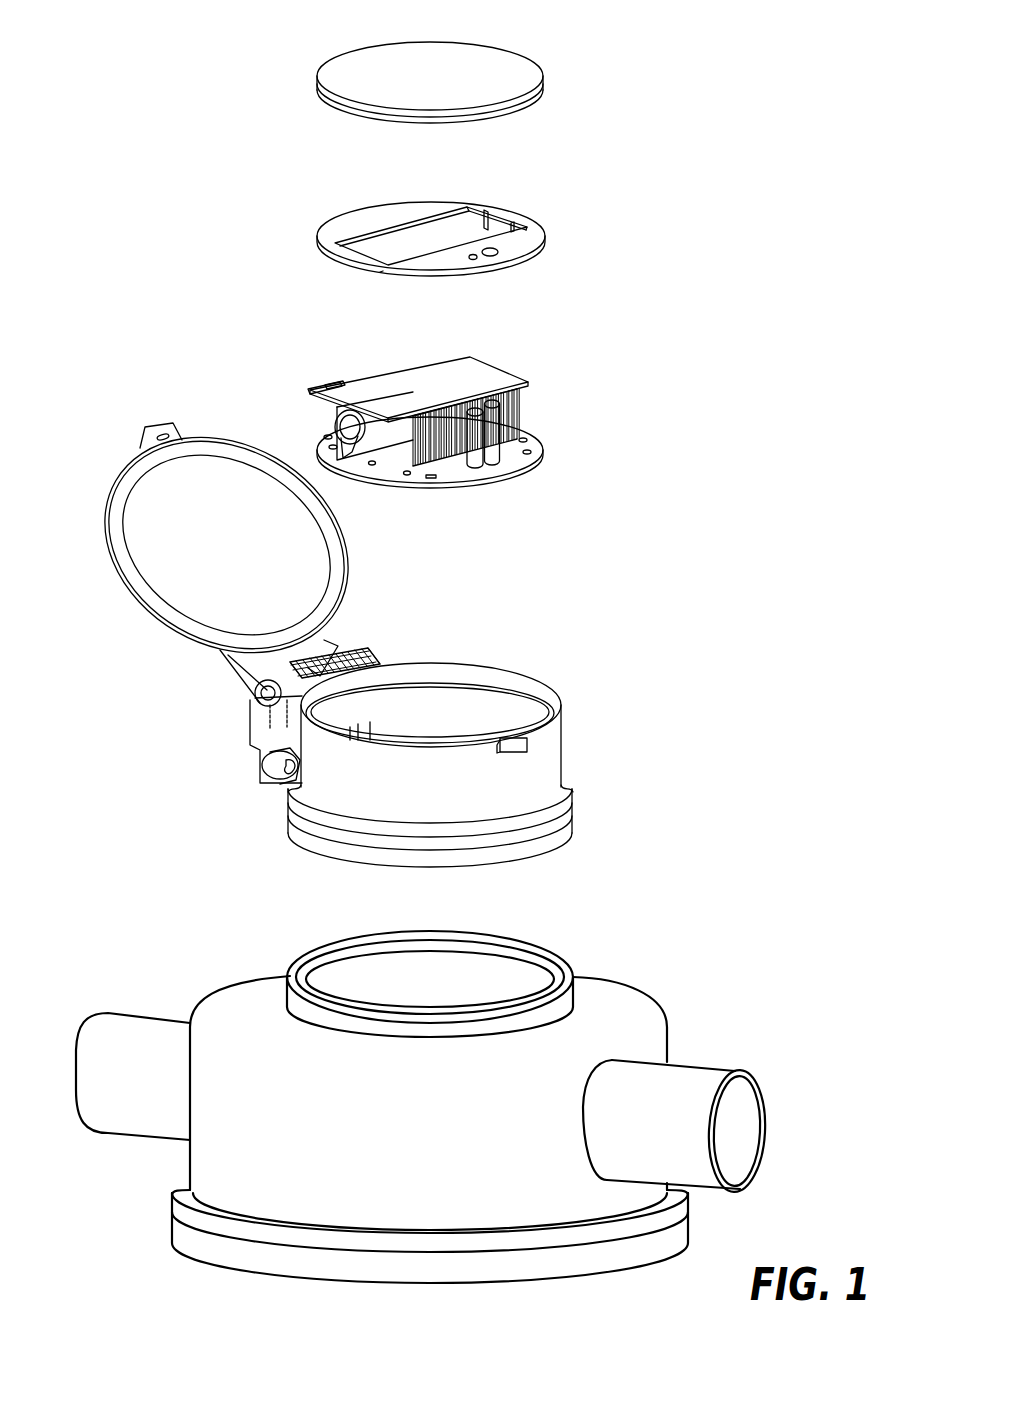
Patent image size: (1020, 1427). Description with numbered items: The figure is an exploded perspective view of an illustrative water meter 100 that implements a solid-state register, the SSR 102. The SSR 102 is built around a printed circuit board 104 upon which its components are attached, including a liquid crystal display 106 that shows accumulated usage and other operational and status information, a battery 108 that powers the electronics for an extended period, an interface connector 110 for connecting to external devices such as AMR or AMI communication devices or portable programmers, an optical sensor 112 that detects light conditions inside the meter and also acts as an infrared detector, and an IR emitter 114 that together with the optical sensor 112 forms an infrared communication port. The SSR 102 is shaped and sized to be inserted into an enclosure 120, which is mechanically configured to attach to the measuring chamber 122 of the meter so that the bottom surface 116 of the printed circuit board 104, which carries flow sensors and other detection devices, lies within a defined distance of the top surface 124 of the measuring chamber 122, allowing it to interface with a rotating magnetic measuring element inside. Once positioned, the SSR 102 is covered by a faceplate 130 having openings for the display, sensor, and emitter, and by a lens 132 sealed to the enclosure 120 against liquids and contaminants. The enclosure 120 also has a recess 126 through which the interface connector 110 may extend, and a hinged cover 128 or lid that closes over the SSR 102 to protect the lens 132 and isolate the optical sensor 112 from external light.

The water meter 100 is at (773, 68).
The SSR 102 is at (531, 345).
The printed circuit board 104 is at (327, 450).
The liquid crystal display 106 is at (410, 380).
The battery 108 is at (385, 437).
The interface connector 110 is at (327, 388).
The optical sensor 112 is at (484, 414).
The IR emitter 114 is at (471, 424).
The bottom surface 116 is at (448, 487).
The enclosure 120 is at (543, 758).
The measuring chamber 122 is at (455, 1154).
The top surface 124 is at (447, 973).
The recess 126 is at (263, 737).
The cover 128 is at (137, 500).
The faceplate 130 is at (343, 227).
The lens 132 is at (350, 82).